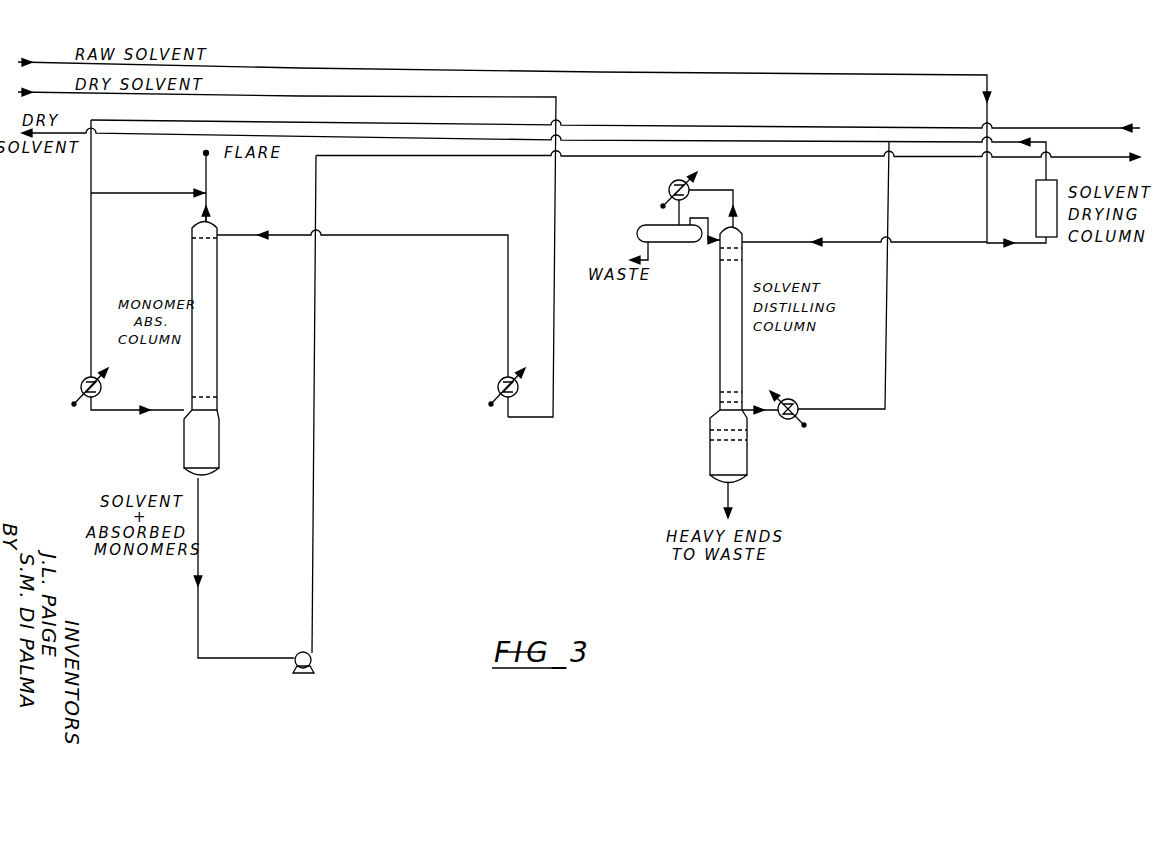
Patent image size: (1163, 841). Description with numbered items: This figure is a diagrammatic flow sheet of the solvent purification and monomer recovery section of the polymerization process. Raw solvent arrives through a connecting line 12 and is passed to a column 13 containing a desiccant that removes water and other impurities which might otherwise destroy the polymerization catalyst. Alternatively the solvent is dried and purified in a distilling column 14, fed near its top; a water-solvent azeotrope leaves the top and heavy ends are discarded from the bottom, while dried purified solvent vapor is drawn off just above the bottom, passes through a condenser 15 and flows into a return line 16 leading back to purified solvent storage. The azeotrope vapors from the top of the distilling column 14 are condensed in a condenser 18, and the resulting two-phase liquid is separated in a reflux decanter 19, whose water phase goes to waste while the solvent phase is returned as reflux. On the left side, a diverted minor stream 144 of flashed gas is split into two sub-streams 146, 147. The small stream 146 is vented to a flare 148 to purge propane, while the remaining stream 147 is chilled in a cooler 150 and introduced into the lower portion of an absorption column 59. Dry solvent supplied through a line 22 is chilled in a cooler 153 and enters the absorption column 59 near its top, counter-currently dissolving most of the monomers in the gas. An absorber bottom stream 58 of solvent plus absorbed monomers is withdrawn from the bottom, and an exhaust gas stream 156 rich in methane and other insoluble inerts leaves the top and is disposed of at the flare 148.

The connecting line 12 is at (472, 74).
The transfer line 22 is at (408, 103).
The diverted minor stream 144 is at (1110, 129).
The return line 16 is at (782, 142).
The absorber bottom stream 58 is at (1082, 158).
The remaining stream 147 is at (90, 282).
The cooler 150 is at (80, 384).
The vent stream 146 is at (164, 198).
The flare 148 is at (204, 154).
The exhaust gas stream 156 is at (208, 200).
The absorption column 59 is at (212, 356).
The cooler 153 is at (496, 384).
The condenser 18 is at (668, 188).
The reflux decanter 19 is at (644, 232).
The distilling column 14 is at (719, 344).
The condenser 15 is at (794, 398).
The column 13 is at (1036, 216).